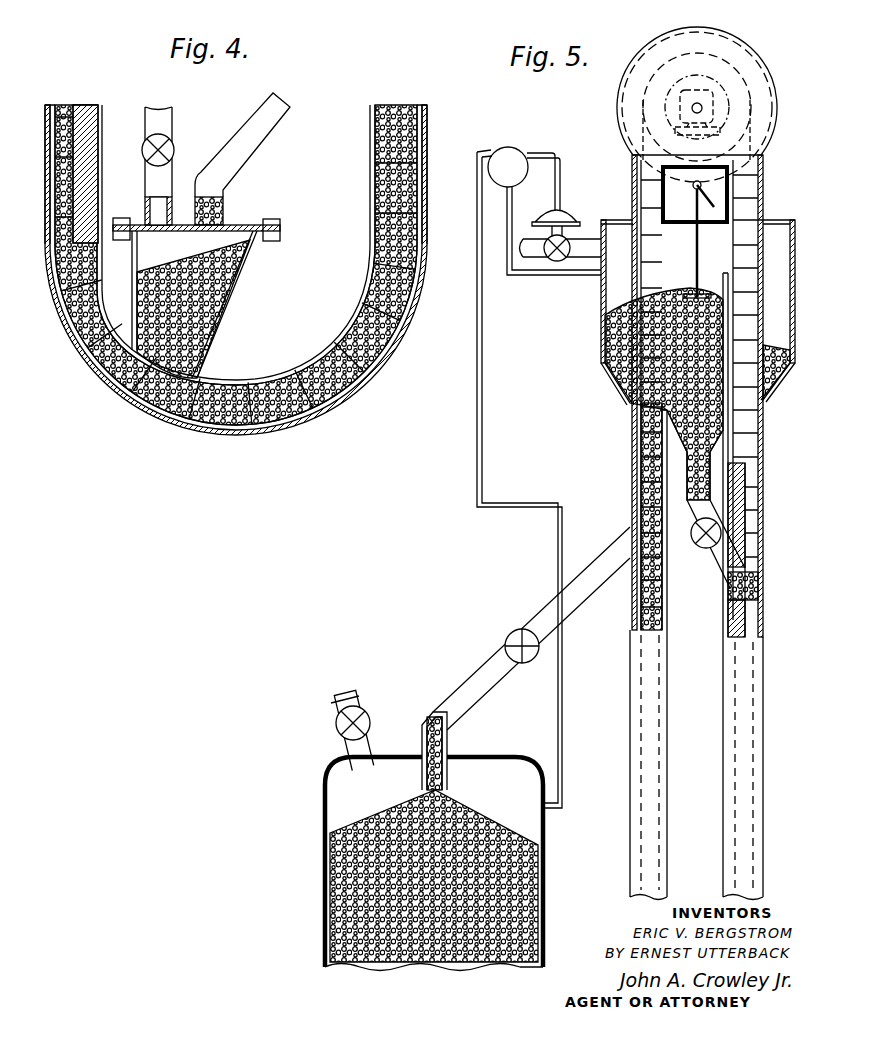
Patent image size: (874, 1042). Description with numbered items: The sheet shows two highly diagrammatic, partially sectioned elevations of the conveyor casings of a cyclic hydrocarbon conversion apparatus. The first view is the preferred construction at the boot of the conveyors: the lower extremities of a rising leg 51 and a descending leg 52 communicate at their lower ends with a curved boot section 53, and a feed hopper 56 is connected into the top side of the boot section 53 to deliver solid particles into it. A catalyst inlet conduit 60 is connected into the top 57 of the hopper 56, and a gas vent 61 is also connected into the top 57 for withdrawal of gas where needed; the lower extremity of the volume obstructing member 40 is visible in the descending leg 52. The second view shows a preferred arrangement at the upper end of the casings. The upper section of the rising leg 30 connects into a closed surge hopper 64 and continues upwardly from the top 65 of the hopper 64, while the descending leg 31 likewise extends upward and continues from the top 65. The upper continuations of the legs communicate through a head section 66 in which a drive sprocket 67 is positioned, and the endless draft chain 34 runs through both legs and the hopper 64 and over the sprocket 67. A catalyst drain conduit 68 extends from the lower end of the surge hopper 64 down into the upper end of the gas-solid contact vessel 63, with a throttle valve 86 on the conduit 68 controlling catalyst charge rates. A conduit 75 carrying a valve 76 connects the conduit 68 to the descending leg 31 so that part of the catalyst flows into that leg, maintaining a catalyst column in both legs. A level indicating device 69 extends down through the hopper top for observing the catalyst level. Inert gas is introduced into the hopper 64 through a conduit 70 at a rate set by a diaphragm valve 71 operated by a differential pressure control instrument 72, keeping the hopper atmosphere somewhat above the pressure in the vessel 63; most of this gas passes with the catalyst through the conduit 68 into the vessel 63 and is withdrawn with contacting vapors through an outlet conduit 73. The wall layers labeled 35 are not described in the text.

In FIG. 5, the rising leg 30 is at (633, 461).
In FIG. 5, the descending leg 31 is at (752, 509).
In FIG. 4, the endless draft chain 34 is at (80, 348).
In FIG. 5, the endless draft chain 34 is at (763, 238).
In FIG. 4, the inner wall 35 is at (106, 368).
In FIG. 5, the inner wall 35 is at (780, 257).
In FIG. 4, the volume obstructing member 40 is at (88, 142).
In FIG. 5, the volume obstructing member 40 is at (752, 483).
In FIG. 4, the rising leg 51 is at (422, 110).
In FIG. 4, the descending leg 52 is at (46, 106).
In FIG. 4, the curved boot section 53 is at (152, 428).
In FIG. 4, the feed hopper 56 is at (226, 312).
In FIG. 4, the top of hopper 57 is at (255, 226).
In FIG. 4, the catalyst inlet conduit 60 is at (262, 133).
In FIG. 4, the gas vent 61 is at (165, 172).
In FIG. 5, the gas-solid contact vessel 63 is at (325, 849).
In FIG. 5, the closed surge hopper 64 is at (604, 342).
In FIG. 5, the top of hopper 65 is at (780, 220).
In FIG. 5, the head section 66 is at (622, 90).
In FIG. 5, the drive sprocket 67 is at (722, 117).
In FIG. 5, the catalyst drain conduit 68 is at (548, 610).
In FIG. 5, the level indicating device 69 is at (699, 240).
In FIG. 5, the conduit 70 is at (589, 236).
In FIG. 5, the diaphragm valve 71 is at (557, 262).
In FIG. 5, the differential pressure control instrument 72 is at (512, 152).
In FIG. 5, the outlet conduit 73 is at (336, 708).
In FIG. 5, the conduit 75 is at (698, 546).
In FIG. 5, the valve 76 is at (716, 520).
In FIG. 5, the throttle valve 86 is at (512, 636).